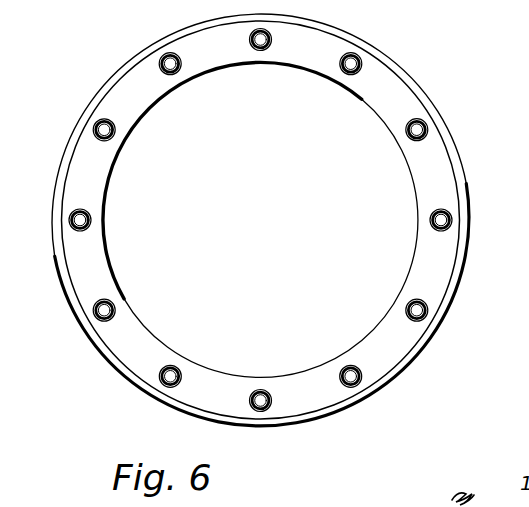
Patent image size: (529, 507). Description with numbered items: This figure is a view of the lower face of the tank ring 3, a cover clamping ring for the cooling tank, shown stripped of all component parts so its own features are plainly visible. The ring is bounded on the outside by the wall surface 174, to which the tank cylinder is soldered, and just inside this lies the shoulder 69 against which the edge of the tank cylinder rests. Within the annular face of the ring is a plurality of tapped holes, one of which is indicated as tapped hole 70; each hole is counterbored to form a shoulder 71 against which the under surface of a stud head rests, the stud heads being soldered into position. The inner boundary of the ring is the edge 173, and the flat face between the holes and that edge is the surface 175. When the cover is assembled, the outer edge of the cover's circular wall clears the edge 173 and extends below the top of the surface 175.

The tank ring 3 is at (285, 220).
The shoulder 69 is at (455, 163).
The tapped hole 70 is at (450, 216).
The shoulder formed by counterboring 71 is at (448, 229).
The edge 173 is at (104, 230).
The wall surface 174 is at (381, 58).
The surface 175 is at (103, 281).